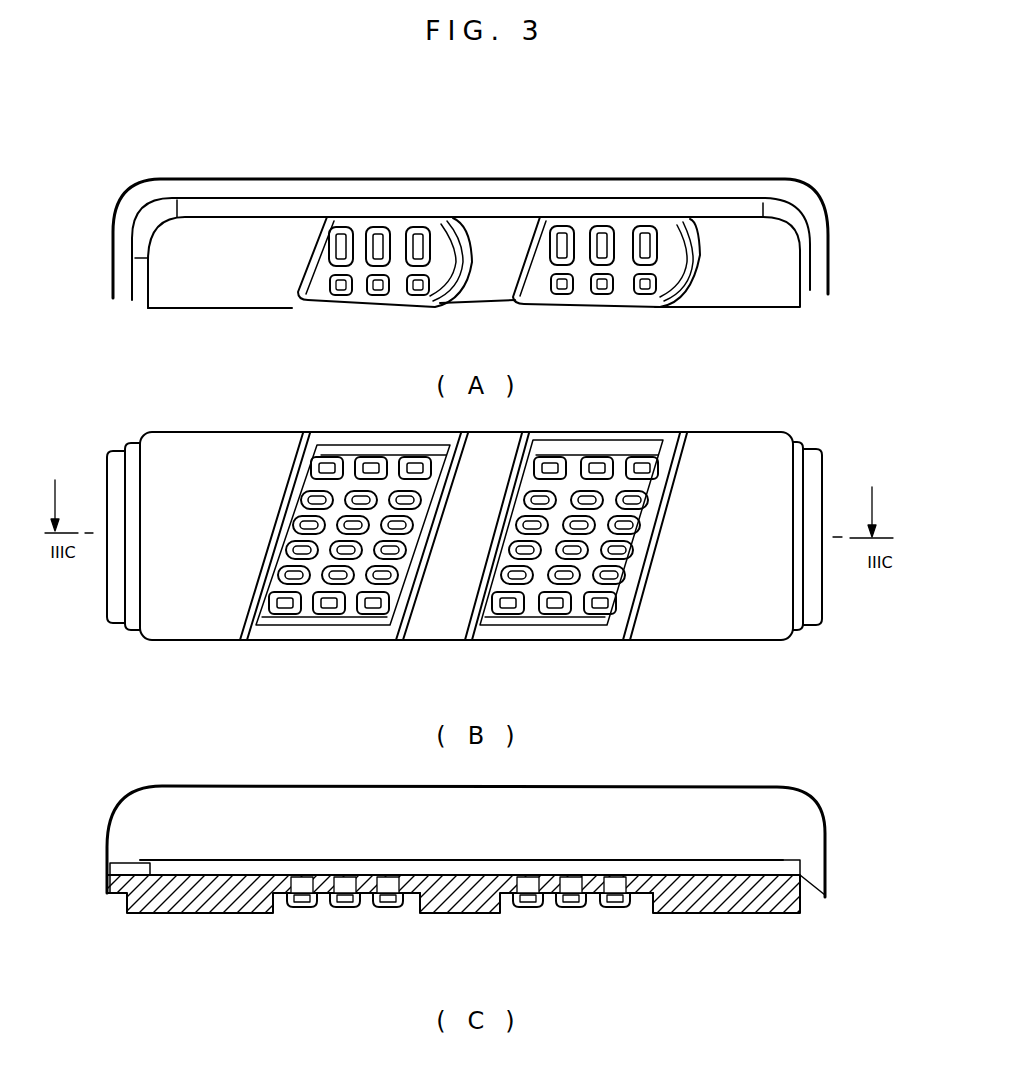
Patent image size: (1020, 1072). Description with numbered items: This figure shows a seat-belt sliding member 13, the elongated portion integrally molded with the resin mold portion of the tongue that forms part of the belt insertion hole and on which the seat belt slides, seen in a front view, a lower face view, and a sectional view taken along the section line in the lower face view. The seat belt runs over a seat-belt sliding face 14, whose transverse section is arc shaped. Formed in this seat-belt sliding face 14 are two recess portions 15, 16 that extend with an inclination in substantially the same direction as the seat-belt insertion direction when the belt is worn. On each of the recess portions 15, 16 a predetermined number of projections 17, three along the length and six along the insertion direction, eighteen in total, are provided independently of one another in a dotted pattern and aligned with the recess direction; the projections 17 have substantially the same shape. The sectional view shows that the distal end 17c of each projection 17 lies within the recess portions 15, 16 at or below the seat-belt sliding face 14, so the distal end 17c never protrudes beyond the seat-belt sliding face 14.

The seat-belt sliding member 13 is at (250, 173).
The seat-belt sliding face 14 is at (230, 298).
The recess portion 15 is at (453, 246).
The recess portion 16 is at (675, 247).
The projection 17 is at (420, 230).
The distal end 17c is at (388, 908).